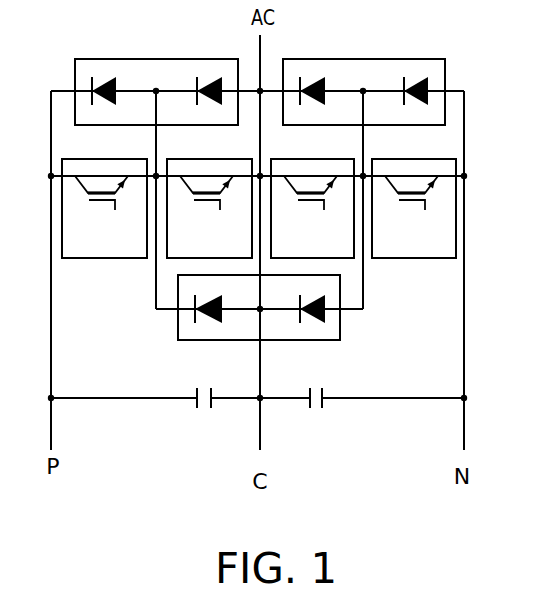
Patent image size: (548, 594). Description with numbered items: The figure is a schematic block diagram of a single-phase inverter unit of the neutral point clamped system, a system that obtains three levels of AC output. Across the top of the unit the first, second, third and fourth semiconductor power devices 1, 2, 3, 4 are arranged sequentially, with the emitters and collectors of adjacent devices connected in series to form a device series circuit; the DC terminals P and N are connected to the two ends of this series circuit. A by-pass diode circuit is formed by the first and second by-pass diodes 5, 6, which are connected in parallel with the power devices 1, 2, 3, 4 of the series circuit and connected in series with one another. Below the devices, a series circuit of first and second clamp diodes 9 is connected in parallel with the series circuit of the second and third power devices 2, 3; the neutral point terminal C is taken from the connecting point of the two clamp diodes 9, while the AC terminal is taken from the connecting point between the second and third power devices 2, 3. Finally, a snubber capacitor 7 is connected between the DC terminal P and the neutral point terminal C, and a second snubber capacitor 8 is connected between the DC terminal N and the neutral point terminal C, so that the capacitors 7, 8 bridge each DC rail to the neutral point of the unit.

The first semiconductor power device 1 is at (90, 258).
The second semiconductor power device 2 is at (178, 258).
The third semiconductor power device 3 is at (338, 258).
The fourth semiconductor power device 4 is at (457, 217).
The first by-pass diode 5 is at (142, 58).
The second by-pass diode 6 is at (398, 58).
The snubber capacitor 7 is at (185, 432).
The snubber capacitor 8 is at (342, 433).
The clamp diodes 9 is at (340, 328).